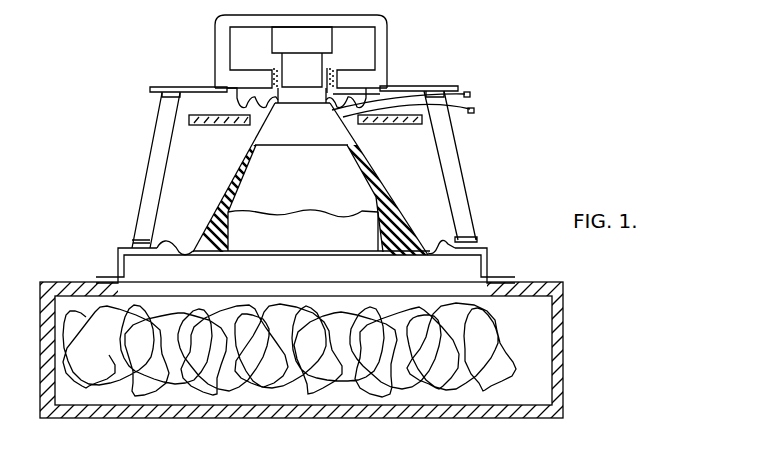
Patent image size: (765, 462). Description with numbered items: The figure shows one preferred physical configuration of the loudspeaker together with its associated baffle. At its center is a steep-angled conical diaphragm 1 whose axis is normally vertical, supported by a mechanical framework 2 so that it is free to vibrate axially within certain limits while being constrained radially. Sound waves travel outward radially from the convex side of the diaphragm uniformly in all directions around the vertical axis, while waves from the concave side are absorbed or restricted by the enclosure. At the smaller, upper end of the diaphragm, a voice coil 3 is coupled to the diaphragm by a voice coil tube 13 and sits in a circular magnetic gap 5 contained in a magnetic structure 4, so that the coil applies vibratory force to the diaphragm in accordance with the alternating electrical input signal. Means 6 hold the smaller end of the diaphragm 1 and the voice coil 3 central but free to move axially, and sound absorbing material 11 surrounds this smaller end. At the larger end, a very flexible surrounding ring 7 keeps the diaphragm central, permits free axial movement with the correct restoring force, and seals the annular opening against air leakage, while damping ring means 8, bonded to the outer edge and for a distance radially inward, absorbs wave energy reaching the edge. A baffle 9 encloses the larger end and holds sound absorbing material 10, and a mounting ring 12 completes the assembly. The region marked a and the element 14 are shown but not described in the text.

The conical diaphragm 1 is at (375, 172).
The mechanical framework 2 is at (462, 164).
The voice coil 3 is at (334, 71).
The magnetic structure 4 is at (388, 63).
The circular magnetic gap 5 is at (277, 63).
The means for holding the smaller end of the diaphragm central 6 is at (232, 100).
The surrounding ring 7 is at (450, 237).
The damping ring means 8 is at (386, 216).
The baffle 9 is at (557, 336).
The sound absorbing material 10 is at (487, 362).
The sound absorbing material 11 is at (187, 121).
The mounting ring 12 is at (488, 260).
The voice coil tube 13 is at (335, 94).
The curved sheet 14 is at (477, 97).
The gap a is at (340, 141).